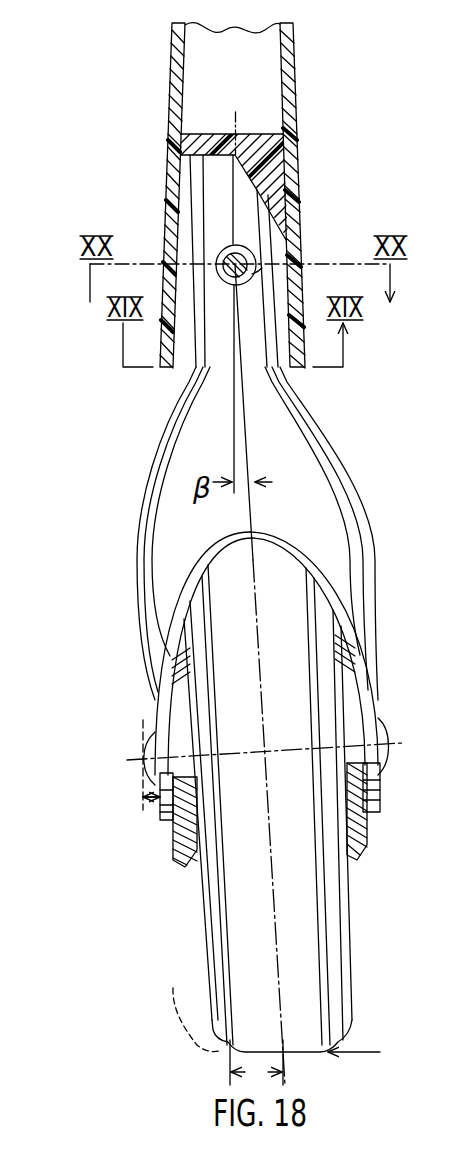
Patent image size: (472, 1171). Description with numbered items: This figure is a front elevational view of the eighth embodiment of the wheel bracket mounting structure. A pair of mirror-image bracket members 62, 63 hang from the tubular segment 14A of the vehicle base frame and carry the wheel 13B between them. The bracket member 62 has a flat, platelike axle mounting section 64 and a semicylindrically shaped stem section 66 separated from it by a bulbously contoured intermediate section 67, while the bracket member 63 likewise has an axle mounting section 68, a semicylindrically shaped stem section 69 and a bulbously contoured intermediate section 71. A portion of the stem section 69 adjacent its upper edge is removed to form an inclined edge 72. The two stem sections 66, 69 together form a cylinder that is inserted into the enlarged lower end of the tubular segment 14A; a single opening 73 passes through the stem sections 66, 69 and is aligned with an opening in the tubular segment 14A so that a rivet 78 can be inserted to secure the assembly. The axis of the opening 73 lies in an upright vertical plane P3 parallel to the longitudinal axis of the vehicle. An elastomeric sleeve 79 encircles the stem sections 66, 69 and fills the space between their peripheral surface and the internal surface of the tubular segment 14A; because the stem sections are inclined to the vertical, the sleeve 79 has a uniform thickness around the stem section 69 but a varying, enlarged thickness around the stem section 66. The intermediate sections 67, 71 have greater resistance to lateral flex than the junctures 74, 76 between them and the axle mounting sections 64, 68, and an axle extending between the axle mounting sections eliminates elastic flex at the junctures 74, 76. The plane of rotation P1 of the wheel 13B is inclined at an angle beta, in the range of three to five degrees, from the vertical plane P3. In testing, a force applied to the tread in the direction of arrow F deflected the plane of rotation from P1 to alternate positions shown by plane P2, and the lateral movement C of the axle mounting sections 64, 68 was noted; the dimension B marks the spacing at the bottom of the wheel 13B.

The tubular segment 14A is at (288, 56).
The elastomeric sleeve 79 is at (267, 157).
The inclined edge 72 is at (257, 184).
The stem section 69 is at (267, 242).
The stem section 66 is at (212, 214).
The opening 73 is at (262, 270).
The rivet 78 is at (229, 284).
The bracket member 62 is at (166, 428).
The bracket member 63 is at (331, 428).
The intermediate section 67 is at (162, 510).
The intermediate section 71 is at (350, 527).
The juncture 74 is at (153, 688).
The juncture 76 is at (372, 672).
The axle mounting section 64 is at (160, 812).
The axle mounting section 68 is at (381, 797).
The wheel 13B is at (352, 951).
The plane of rotation P1 is at (283, 1000).
The deflected plane position P2 is at (215, 1044).
The upright vertical plane P3 is at (233, 426).
The offset dimension B is at (256, 1063).
The lateral movement C is at (150, 797).
The arrow F is at (364, 1047).